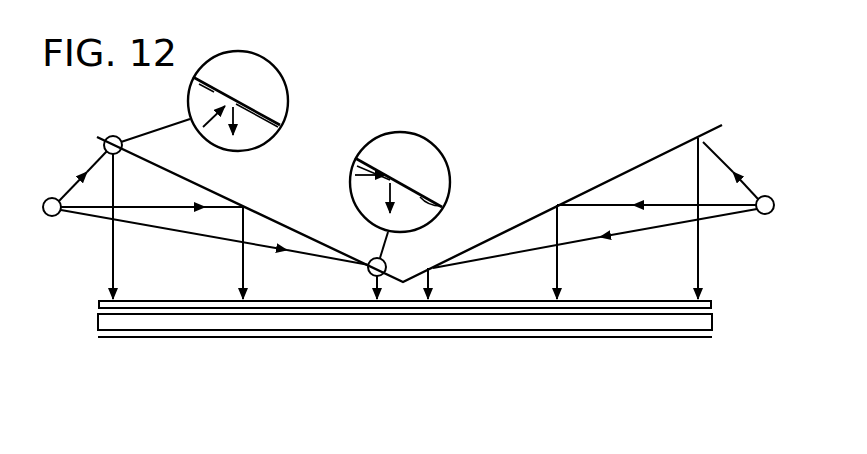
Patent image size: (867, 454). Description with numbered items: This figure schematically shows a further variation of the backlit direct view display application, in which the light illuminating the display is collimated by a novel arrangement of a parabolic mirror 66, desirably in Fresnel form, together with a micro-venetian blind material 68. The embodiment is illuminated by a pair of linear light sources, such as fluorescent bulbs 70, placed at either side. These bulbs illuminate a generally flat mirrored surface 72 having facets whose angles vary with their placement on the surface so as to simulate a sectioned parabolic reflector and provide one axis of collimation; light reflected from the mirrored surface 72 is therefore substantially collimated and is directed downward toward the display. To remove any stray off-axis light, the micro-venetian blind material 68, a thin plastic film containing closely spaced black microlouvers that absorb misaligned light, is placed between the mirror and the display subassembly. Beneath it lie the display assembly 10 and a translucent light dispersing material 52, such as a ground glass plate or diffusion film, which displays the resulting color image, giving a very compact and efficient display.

The assembly 10 is at (713, 318).
The translucent light dispersing material 52 is at (686, 338).
The parabolic mirror 66 is at (219, 189).
The micro-venetian blind material 68 is at (712, 304).
The fluorescent bulbs 70 is at (55, 217).
The mirrored surface 72 is at (224, 98).